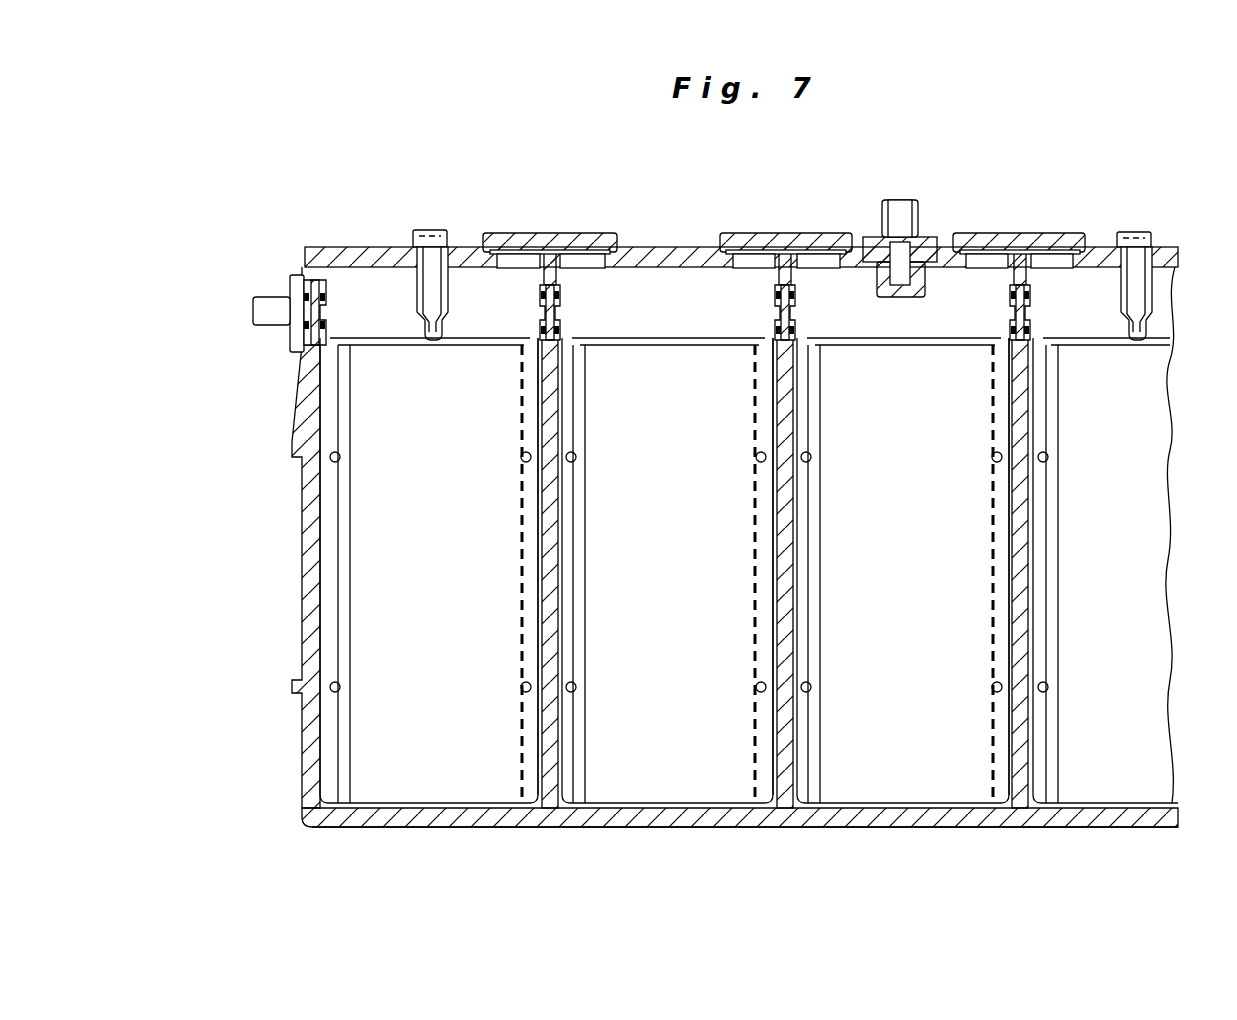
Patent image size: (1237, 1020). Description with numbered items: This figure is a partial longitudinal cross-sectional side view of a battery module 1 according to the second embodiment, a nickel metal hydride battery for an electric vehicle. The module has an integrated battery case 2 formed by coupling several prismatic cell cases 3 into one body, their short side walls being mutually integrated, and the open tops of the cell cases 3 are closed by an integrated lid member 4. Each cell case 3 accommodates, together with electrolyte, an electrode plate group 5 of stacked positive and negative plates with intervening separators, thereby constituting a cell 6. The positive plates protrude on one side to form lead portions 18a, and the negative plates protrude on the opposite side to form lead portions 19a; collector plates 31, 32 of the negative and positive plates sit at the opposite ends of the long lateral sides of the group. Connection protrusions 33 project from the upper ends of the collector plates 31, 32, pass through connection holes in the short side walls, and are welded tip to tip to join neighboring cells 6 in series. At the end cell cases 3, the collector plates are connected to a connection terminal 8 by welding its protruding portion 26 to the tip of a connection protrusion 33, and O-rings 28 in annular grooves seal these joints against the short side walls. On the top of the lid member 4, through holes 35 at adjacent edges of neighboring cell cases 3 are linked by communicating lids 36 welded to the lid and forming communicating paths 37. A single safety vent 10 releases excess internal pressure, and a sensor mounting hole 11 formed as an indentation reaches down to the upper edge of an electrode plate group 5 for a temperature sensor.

The battery module 1 is at (256, 542).
The integrated battery case 2 is at (288, 590).
The cell case 3 is at (412, 830).
The lid member 4 is at (655, 248).
The electrode plate group 5 is at (441, 584).
The cell 6 is at (470, 836).
The connection terminal 8 is at (273, 308).
The safety vent 10 is at (920, 240).
The sensor mounting hole 11 is at (428, 292).
The lead portion 18a is at (330, 511).
The lead portion 19a is at (524, 509).
The protruding portion 26 is at (292, 312).
The O-ring 28 is at (305, 292).
The collector plate 31 is at (320, 425).
The collector plate 32 is at (520, 424).
The connection protrusion 33 is at (320, 318).
The through hole 35 is at (523, 262).
The communicating lid 36 is at (530, 235).
The communicating path 37 is at (567, 252).